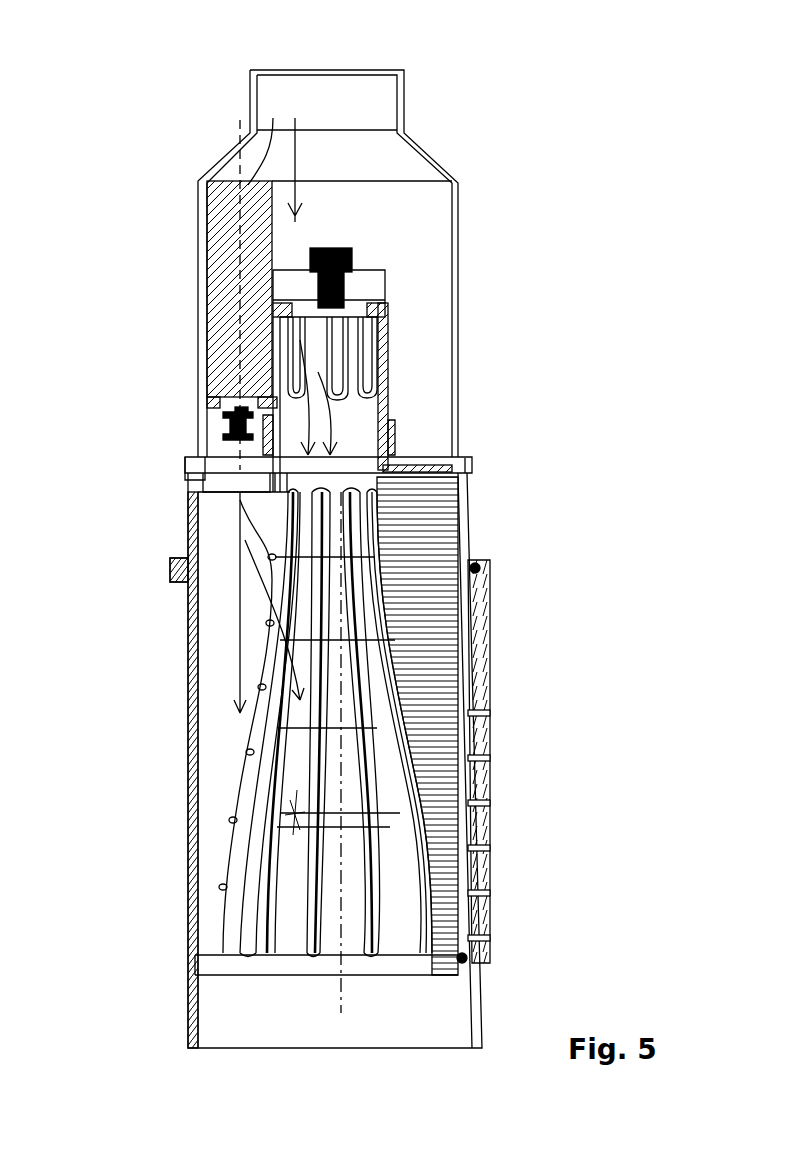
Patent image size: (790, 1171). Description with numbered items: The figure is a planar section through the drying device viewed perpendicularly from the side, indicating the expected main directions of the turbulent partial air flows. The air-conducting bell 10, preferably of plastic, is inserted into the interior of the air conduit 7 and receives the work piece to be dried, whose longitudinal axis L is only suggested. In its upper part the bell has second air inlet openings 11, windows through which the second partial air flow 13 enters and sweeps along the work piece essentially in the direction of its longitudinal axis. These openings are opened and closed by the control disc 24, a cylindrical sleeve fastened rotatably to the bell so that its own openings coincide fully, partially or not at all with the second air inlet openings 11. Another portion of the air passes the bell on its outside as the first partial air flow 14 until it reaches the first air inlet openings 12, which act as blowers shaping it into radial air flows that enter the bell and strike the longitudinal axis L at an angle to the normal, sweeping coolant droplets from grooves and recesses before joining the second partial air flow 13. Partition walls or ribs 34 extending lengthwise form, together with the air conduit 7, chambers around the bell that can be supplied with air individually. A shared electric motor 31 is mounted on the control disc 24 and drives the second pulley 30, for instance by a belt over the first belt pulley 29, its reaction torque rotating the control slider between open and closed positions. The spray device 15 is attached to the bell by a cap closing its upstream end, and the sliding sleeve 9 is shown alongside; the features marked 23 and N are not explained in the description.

The air conduit 7 is at (455, 325).
The sliding sleeve 9 is at (478, 637).
The air-conducting bell 10 is at (280, 885).
The second air inlet opening 11 is at (303, 325).
The first air inlet opening 12 is at (300, 930).
The second partial air flow 13 is at (298, 168).
The first partial air flow 14 is at (240, 535).
The spray device 15 is at (327, 262).
The spring element 23 is at (300, 862).
The control disc 24 is at (392, 355).
The first belt pulley 29 is at (205, 470).
The second pulley 30 is at (225, 428).
The electric motor 31 is at (222, 313).
The partition walls or ribs 34 is at (420, 592).
The slots N is at (462, 868).
The longitudinal axis L is at (342, 997).